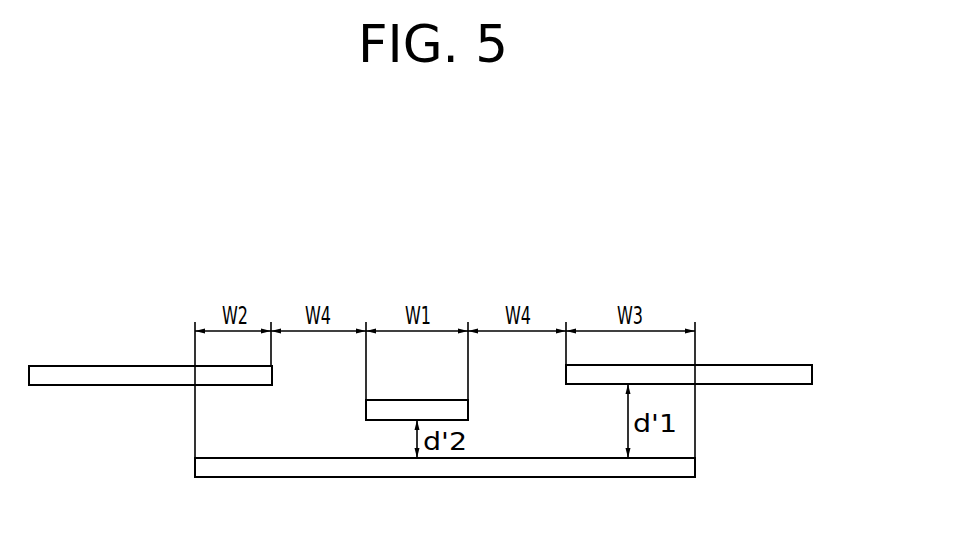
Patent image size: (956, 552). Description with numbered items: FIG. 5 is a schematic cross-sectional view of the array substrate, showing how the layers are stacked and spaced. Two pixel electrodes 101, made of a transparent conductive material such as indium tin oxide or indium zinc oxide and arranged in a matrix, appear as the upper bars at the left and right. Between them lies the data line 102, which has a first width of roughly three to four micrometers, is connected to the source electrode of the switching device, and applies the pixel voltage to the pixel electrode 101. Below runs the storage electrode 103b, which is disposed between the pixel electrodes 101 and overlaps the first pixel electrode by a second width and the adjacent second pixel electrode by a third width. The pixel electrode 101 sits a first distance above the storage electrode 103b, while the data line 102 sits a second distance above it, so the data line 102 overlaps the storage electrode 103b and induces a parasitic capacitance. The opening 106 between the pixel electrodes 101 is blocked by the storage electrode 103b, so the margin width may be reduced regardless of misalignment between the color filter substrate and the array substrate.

The pixel electrode 101 is at (782, 365).
The data line 102 is at (469, 412).
The storage electrode 103b is at (695, 463).
The opening 106 is at (338, 382).